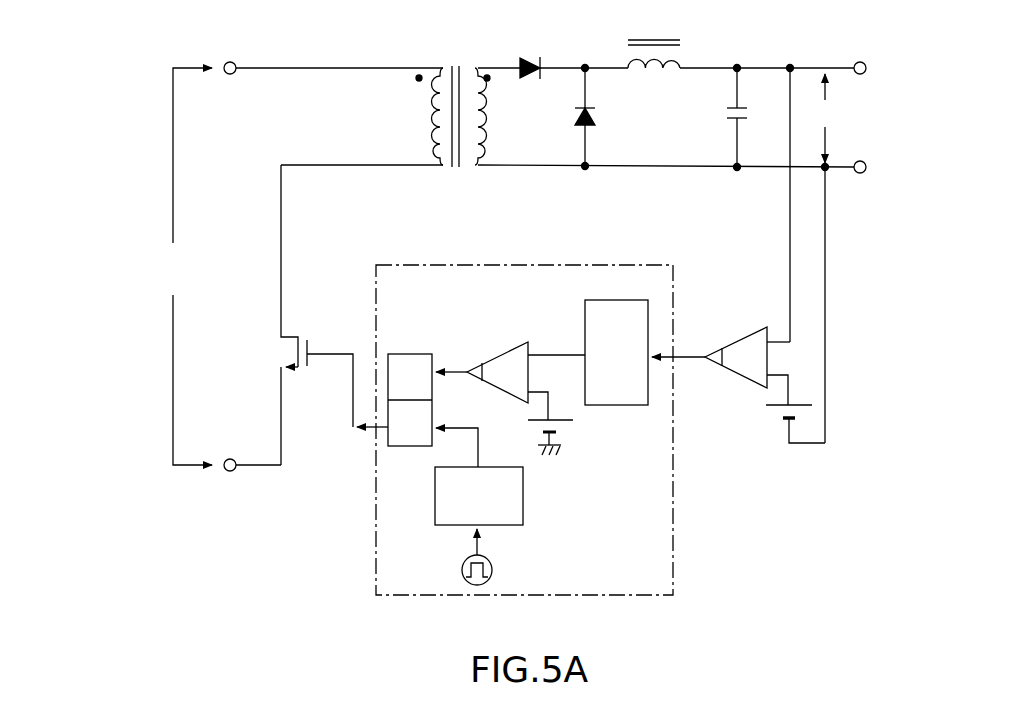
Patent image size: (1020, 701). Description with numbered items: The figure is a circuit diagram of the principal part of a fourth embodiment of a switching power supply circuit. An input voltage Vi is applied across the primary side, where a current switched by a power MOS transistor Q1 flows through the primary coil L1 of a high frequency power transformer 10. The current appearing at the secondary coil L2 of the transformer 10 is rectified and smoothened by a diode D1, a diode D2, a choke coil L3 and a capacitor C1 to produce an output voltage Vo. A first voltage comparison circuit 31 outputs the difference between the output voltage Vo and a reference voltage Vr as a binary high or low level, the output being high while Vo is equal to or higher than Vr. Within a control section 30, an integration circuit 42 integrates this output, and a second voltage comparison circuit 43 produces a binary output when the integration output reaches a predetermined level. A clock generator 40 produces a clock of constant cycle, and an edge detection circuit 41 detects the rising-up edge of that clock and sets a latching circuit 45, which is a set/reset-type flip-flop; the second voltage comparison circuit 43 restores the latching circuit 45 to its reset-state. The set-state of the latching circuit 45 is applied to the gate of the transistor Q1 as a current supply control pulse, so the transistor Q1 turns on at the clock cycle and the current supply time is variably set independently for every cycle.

The high frequency power transformer 10 is at (404, 87).
The control circuit 30 is at (622, 262).
The first voltage comparison circuit 31 is at (757, 326).
The clock generator 40 is at (493, 569).
The edge detection circuit 41 is at (523, 494).
The integration circuit 42 is at (585, 318).
The second voltage comparison circuit 43 is at (513, 347).
The latching circuit 45 is at (408, 352).
The primary coil L1 is at (362, 116).
The secondary coil L2 is at (501, 116).
The choke coil L3 is at (719, 44).
The diode D1 is at (531, 57).
The flywheel diode D2 is at (603, 117).
The capacitor C1 is at (713, 118).
The power MOS transistor Q1 is at (310, 315).
The input voltage terminals Vi is at (195, 266).
The output voltage Vo is at (827, 117).
The reference voltage Vr is at (782, 424).